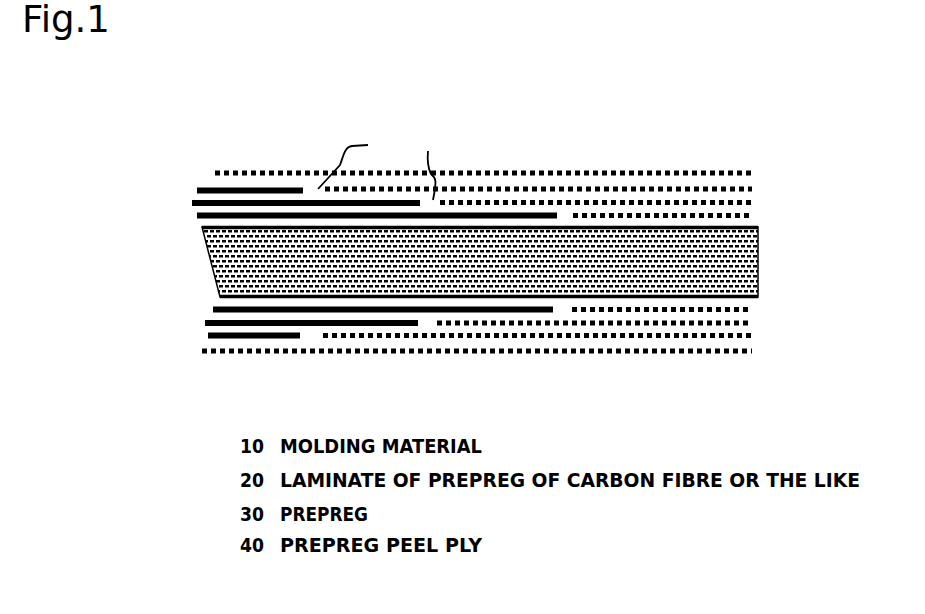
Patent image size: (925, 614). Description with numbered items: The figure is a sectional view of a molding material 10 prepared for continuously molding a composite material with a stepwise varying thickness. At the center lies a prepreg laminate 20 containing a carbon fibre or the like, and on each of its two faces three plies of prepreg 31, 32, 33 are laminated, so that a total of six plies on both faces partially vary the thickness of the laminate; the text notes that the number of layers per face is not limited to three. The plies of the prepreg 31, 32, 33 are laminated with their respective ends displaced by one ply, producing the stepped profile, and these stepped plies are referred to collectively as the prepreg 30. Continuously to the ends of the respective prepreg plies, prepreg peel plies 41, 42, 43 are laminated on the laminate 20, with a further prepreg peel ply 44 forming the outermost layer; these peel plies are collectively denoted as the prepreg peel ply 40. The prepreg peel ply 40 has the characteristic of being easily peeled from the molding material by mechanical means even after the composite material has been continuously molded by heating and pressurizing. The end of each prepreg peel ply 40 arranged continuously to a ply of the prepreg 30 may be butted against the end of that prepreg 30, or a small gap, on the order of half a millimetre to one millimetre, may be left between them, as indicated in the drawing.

The molding material 10 is at (522, 155).
The prepreg laminate 20 is at (758, 248).
The prepreg 30 is at (142, 182).
The prepreg ply 31 is at (197, 216).
The prepreg ply 32 is at (192, 203).
The prepreg ply 33 is at (197, 190).
The prepreg peel ply 40 is at (832, 143).
The prepreg peel ply 41 is at (752, 215).
The prepreg peel ply 42 is at (752, 202).
The prepreg peel ply 43 is at (752, 188).
The prepreg peel ply 44 is at (752, 172).